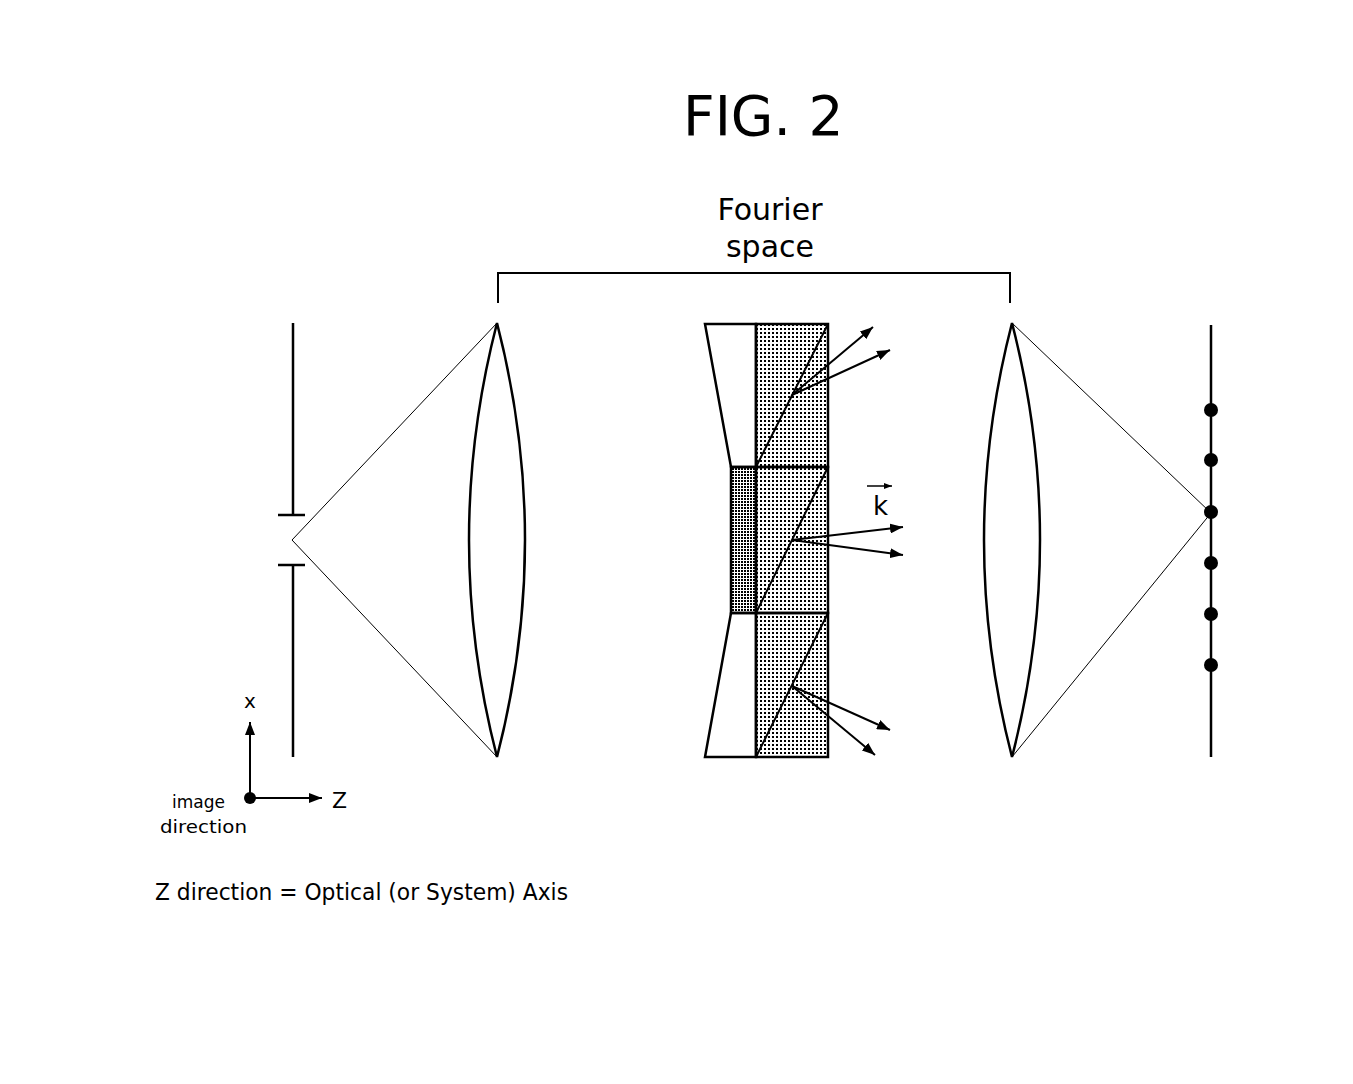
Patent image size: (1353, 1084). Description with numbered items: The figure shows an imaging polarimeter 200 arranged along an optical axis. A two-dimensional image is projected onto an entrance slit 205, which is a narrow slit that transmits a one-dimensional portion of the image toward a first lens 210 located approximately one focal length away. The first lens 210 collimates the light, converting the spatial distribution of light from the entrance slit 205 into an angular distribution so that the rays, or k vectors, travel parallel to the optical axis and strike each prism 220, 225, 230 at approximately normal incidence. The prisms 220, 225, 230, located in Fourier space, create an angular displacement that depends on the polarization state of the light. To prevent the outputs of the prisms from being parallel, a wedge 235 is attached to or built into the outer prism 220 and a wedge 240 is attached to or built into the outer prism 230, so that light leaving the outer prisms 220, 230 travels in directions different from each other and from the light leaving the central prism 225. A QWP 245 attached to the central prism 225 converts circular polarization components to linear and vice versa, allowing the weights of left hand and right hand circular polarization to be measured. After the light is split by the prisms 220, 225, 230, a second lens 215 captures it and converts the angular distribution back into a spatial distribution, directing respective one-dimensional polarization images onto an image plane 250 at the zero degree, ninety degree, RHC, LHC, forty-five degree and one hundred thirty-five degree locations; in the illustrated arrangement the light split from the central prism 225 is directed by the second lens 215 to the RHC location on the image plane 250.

The imaging polarimeter 200 is at (283, 167).
The entrance slit 205 is at (278, 488).
The first lens 210 is at (475, 333).
The second lens 215 is at (1025, 757).
The prism 220 is at (807, 335).
The central prism 225 is at (807, 577).
The prism 230 is at (797, 737).
The wedge 235 is at (727, 335).
The wedge 240 is at (733, 712).
The QWP 245 is at (743, 567).
The image plane 250 is at (1185, 325).